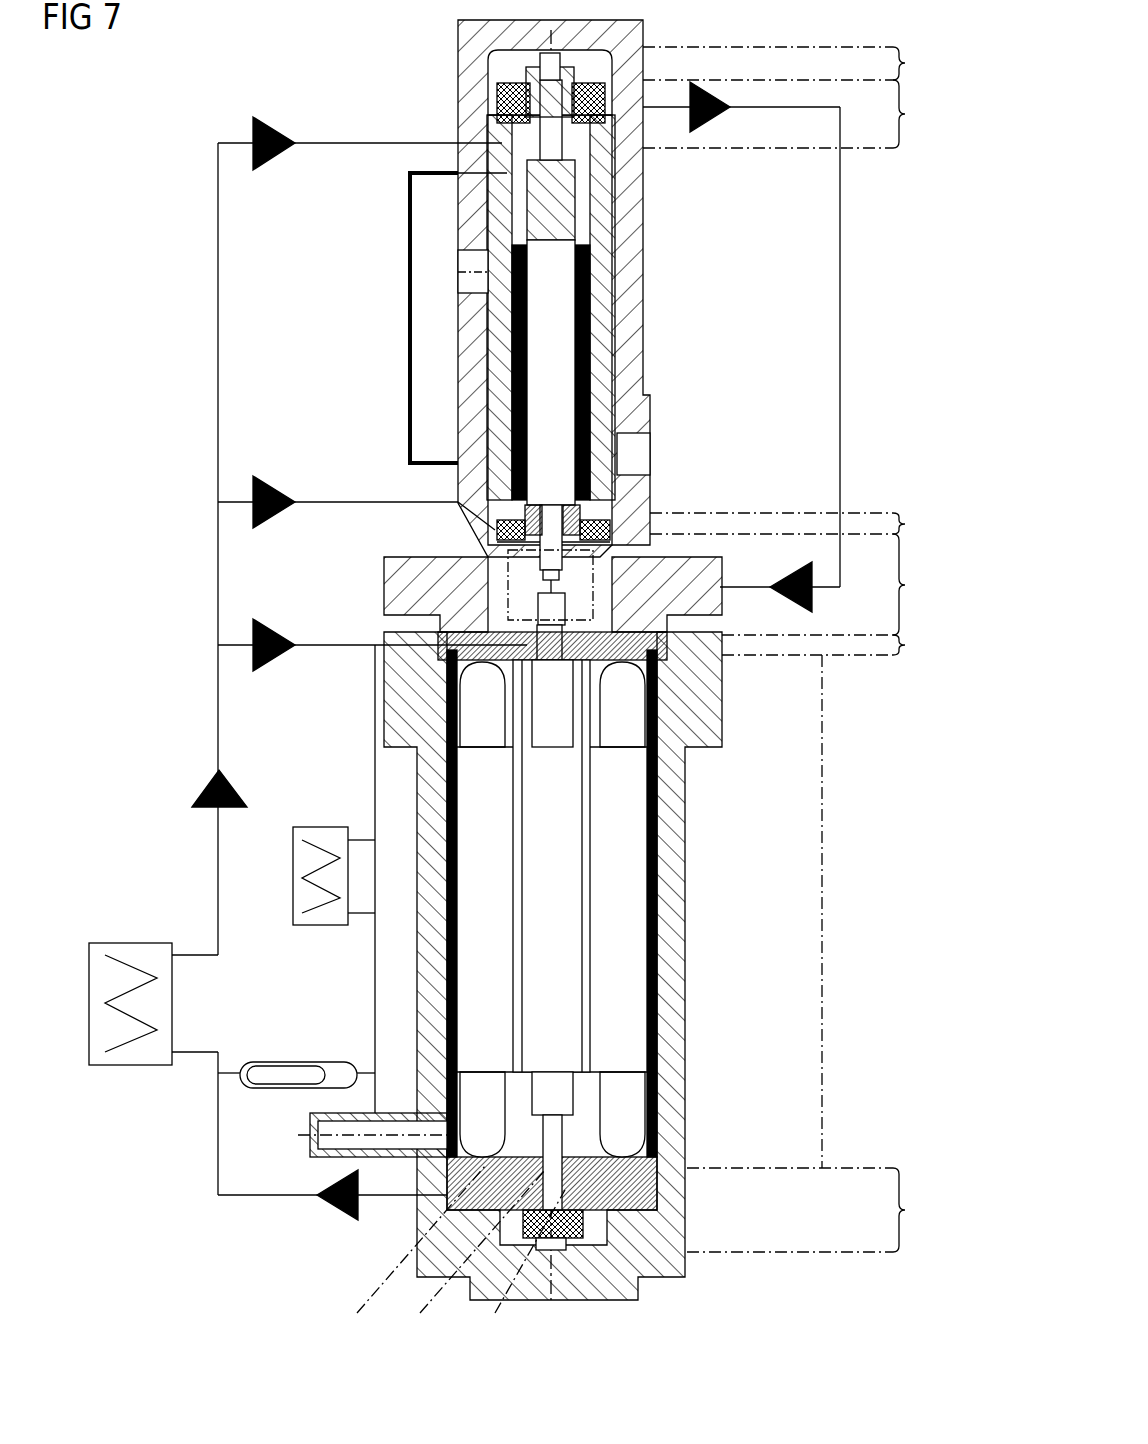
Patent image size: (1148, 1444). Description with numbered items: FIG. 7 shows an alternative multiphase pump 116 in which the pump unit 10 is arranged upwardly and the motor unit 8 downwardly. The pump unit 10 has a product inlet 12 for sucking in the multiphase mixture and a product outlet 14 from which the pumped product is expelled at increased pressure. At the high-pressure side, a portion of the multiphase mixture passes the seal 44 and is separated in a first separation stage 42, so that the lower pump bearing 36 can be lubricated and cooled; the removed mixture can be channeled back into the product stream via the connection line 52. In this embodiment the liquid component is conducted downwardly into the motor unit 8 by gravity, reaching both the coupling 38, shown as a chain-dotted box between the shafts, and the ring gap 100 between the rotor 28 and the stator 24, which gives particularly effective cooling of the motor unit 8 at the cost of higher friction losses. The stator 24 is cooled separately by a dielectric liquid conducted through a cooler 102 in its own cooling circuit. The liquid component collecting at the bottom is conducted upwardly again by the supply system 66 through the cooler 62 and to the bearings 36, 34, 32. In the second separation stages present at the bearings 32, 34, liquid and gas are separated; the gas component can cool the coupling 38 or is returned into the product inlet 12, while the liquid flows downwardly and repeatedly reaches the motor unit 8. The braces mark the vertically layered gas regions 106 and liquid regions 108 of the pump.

The motor unit 8 is at (700, 879).
The pump unit 10 is at (650, 286).
The product inlet 12 is at (642, 452).
The product outlet 14 is at (465, 281).
The stator 24 is at (627, 947).
The rotor 28 is at (575, 1013).
The lower motor bearing 32 is at (590, 620).
The upper pump bearing 34 is at (642, 477).
The lower pump bearing 36 is at (603, 86).
The coupling 38 is at (598, 552).
The first separation stage 42 is at (478, 98).
The seal 44 is at (508, 222).
The connection line 52 is at (408, 330).
The cooler 62 is at (120, 942).
The supply system 66 is at (221, 390).
The ring gap 100 is at (586, 813).
The cooler 102 is at (317, 927).
The gas regions 106 is at (802, 339).
The liquid regions 108 is at (802, 666).
The alternative multiphase pump 116 is at (280, 85).